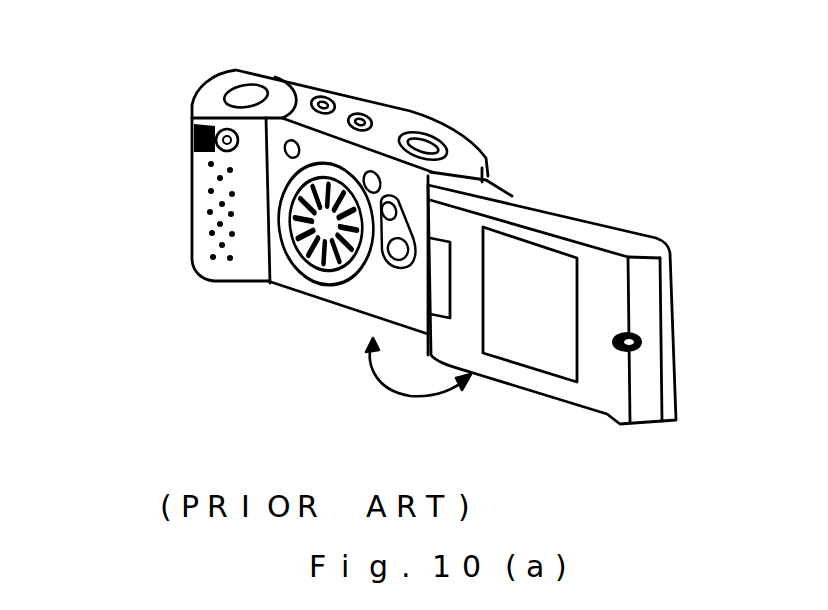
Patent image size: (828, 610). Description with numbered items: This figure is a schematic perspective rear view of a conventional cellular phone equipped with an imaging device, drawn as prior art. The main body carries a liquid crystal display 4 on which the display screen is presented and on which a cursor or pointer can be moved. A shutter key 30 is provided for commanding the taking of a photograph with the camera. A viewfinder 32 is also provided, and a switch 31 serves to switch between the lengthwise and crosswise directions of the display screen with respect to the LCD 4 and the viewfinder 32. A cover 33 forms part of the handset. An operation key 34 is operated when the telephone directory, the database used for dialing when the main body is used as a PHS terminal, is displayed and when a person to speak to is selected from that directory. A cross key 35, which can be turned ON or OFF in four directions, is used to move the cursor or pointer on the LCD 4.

The liquid crystal display 4 is at (533, 362).
The shutter key 30 is at (427, 134).
The switch 31 is at (194, 136).
The viewfinder 32 is at (193, 153).
The cover 33 is at (577, 222).
The operation key 34 is at (369, 107).
The cross key 35 is at (311, 262).